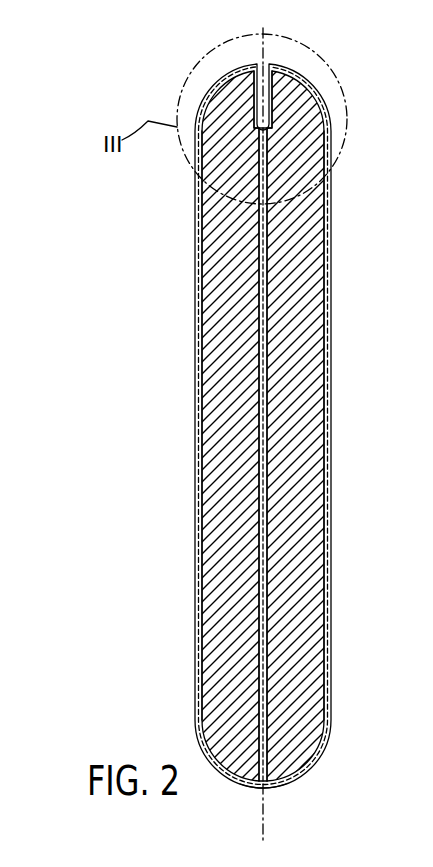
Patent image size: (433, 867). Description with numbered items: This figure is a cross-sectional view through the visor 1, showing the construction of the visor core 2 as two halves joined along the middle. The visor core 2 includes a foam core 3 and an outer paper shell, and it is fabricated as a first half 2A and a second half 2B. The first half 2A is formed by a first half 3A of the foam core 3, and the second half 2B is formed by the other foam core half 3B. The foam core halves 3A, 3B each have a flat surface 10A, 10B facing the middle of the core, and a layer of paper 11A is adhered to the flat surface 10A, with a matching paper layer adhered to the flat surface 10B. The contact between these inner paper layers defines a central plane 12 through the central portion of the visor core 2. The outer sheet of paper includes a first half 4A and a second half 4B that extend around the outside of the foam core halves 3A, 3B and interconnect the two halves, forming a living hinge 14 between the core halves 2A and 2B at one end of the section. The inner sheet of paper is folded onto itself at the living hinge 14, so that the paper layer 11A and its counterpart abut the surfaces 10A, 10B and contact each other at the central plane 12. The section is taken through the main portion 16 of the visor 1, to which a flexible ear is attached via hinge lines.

The visor 1 is at (354, 200).
The visor core 2 is at (197, 240).
The first half 2A is at (200, 515).
The second half 2B is at (328, 545).
The foam core 3 is at (318, 284).
The first half of foam core 3A is at (217, 428).
The foam core half 3B is at (315, 455).
The first half of first sheet of paper 4A is at (200, 572).
The second half of first sheet of paper 4B is at (326, 325).
The flat surface 10A is at (259, 323).
The flat surface 10B is at (267, 360).
The layer of paper 11A is at (260, 383).
The central plane 12 is at (267, 797).
The living hinge 14 is at (261, 789).
The main portion 16 is at (268, 66).